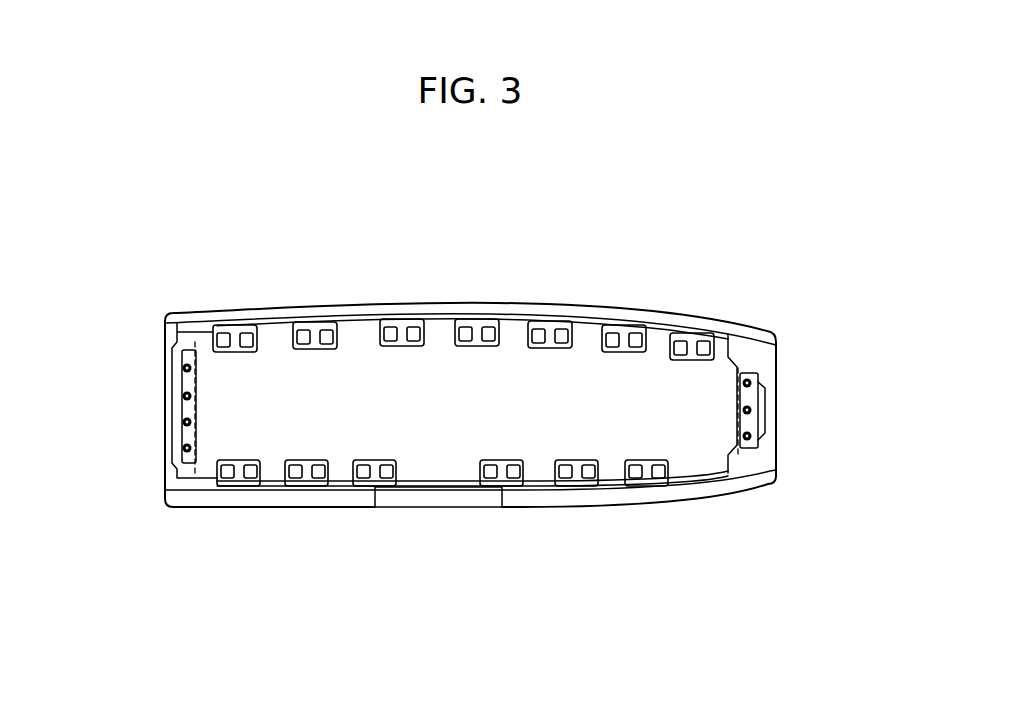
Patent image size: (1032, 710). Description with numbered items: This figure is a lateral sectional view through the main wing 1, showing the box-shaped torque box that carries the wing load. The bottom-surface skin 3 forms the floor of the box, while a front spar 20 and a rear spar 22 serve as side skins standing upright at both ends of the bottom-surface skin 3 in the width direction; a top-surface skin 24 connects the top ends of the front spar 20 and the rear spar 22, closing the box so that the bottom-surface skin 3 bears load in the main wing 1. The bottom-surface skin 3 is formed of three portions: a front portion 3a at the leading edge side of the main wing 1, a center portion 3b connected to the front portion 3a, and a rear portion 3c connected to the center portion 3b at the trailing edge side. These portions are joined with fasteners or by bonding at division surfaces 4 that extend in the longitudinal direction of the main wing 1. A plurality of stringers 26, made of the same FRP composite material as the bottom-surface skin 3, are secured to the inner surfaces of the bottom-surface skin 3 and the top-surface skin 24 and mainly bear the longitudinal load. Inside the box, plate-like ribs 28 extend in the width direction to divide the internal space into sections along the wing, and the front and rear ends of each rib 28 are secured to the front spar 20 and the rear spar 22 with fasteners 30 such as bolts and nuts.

The main wing 1 is at (650, 238).
The bottom-surface skin 3 is at (313, 578).
The front portion 3a is at (233, 498).
The center portion 3b is at (440, 497).
The rear portion 3c is at (604, 500).
The division surfaces 4 is at (375, 507).
The front spar 20 is at (165, 378).
The rear spar 22 is at (772, 357).
The top-surface skin 24 is at (397, 303).
The stringers 26 is at (318, 347).
The ribs 28 is at (389, 415).
The fasteners 30 is at (190, 422).